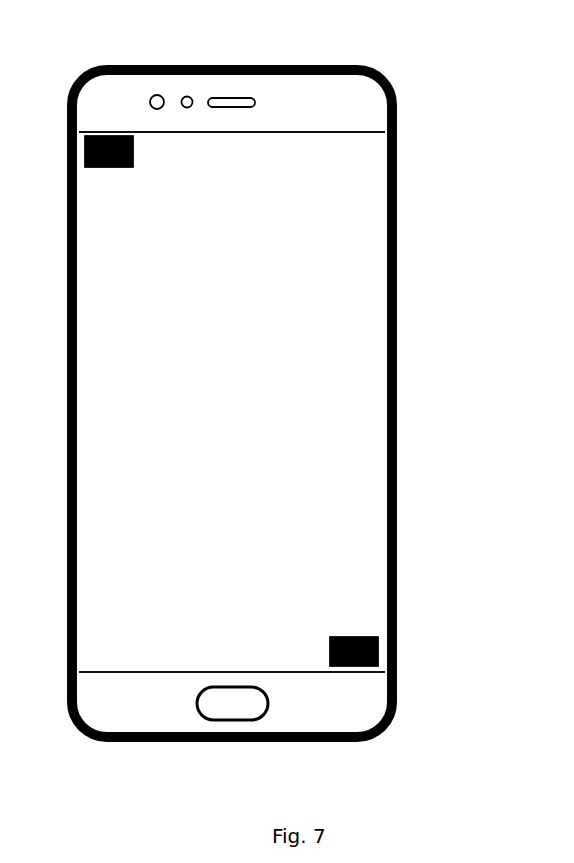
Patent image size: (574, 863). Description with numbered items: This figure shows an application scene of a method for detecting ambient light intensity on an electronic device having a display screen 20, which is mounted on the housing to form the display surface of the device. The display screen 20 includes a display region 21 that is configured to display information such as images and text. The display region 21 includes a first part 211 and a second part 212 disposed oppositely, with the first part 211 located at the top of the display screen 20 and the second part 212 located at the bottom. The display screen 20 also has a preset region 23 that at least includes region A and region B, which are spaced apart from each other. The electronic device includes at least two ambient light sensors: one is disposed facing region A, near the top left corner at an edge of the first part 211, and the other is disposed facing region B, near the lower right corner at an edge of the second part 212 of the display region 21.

The display screen 20 is at (353, 137).
The display region 21 is at (334, 348).
The first part 211 is at (218, 155).
The second part 212 is at (220, 648).
The preset region 23 is at (463, 612).
The region A is at (84, 165).
The region B is at (380, 662).